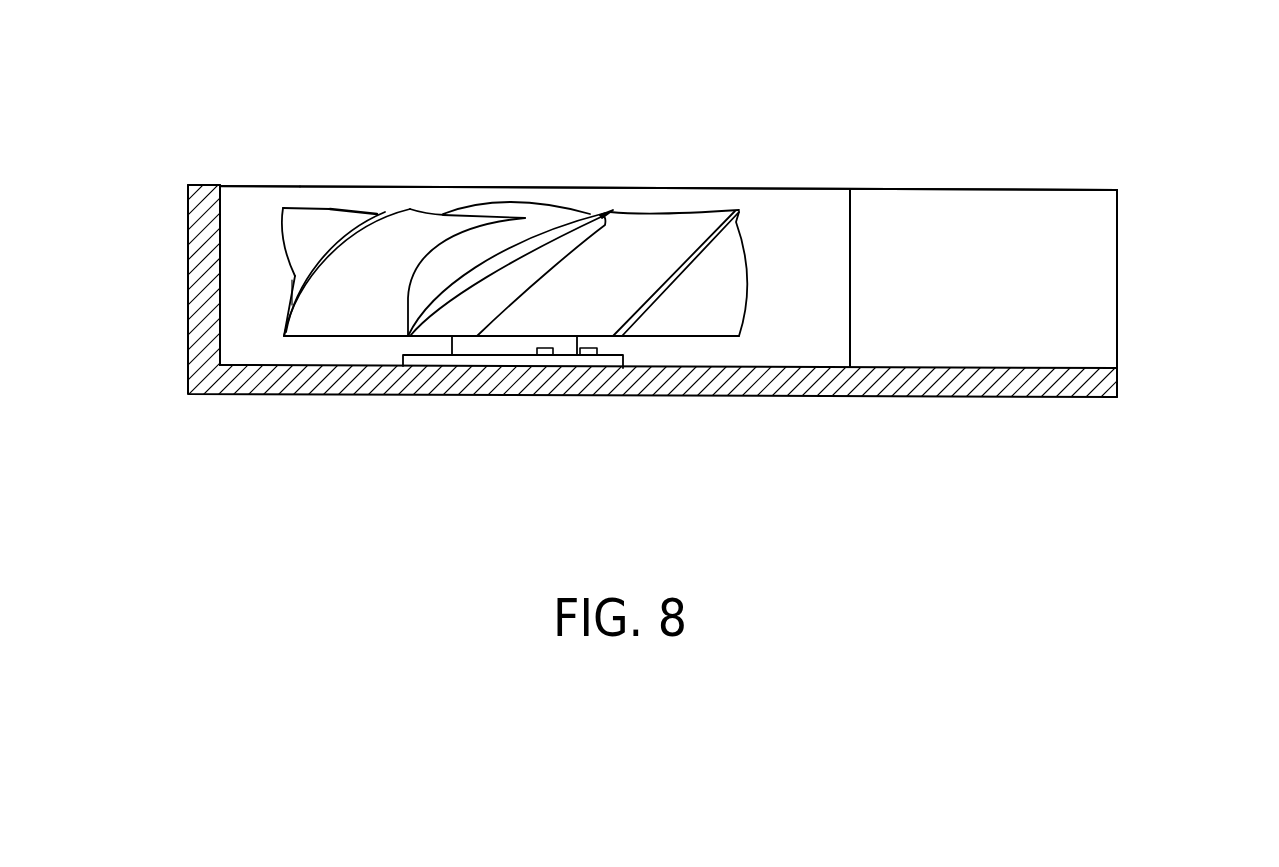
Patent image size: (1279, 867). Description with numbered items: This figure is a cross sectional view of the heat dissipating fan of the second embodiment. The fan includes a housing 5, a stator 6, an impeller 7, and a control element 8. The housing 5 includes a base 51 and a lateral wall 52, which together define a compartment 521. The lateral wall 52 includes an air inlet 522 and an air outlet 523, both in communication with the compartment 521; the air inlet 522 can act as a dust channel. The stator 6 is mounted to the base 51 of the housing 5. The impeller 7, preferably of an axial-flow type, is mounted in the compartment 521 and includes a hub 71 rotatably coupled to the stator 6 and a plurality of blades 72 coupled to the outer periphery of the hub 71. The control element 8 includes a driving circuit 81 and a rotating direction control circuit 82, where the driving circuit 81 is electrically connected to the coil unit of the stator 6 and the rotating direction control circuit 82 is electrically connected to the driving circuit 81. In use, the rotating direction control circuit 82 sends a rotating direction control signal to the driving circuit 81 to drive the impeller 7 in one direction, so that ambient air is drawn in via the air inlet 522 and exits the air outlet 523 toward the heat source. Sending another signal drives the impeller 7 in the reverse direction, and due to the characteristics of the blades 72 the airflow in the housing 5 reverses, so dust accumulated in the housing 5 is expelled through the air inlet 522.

The housing 5 is at (148, 225).
The base 51 is at (260, 362).
The lateral wall 52 is at (198, 237).
The compartment 521 is at (569, 175).
The air inlet 522 is at (238, 163).
The air outlet 523 is at (1145, 231).
The stator 6 is at (423, 352).
The impeller 7 is at (600, 188).
The hub 71 is at (472, 207).
The blades 72 is at (683, 232).
The control element 8 is at (560, 503).
The driving circuit 81 is at (547, 355).
The rotating direction control circuit 82 is at (590, 355).